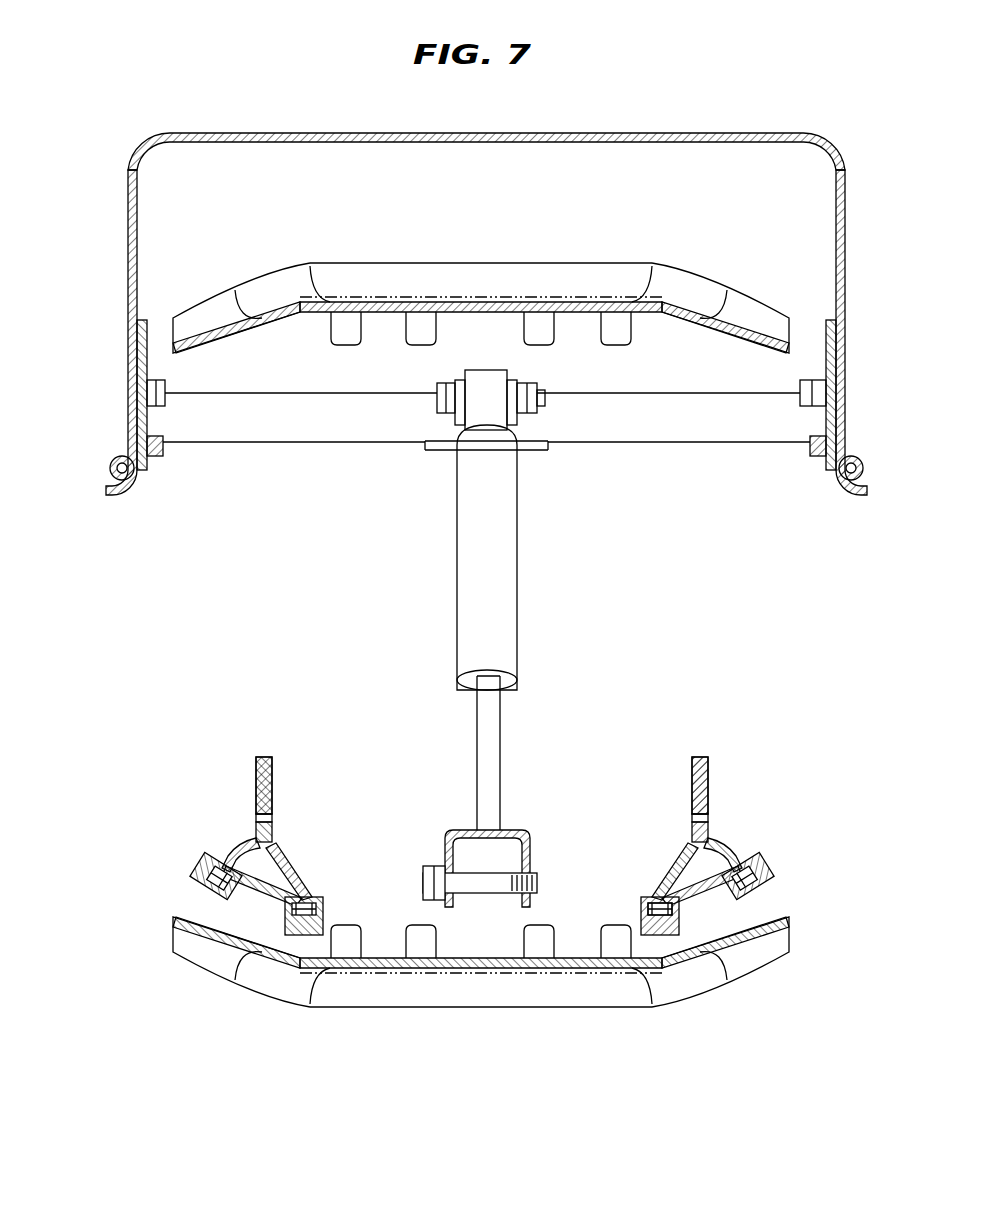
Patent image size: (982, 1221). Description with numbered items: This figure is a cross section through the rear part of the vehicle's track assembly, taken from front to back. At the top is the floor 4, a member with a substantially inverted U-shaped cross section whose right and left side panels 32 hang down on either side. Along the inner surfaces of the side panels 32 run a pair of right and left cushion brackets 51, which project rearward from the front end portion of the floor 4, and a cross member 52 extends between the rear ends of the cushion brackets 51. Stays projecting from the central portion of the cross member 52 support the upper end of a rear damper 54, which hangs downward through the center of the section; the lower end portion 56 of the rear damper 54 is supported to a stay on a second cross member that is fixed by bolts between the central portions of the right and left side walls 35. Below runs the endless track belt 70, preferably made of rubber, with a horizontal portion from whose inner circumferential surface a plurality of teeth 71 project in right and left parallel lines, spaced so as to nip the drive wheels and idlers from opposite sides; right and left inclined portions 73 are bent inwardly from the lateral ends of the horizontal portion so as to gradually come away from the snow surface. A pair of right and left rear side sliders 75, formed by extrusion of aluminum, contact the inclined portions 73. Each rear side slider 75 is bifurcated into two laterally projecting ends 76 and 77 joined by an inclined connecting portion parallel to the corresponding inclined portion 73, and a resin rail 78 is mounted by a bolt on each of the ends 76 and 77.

The floor 4 is at (648, 132).
The side panels 32 is at (128, 228).
The cushion brackets 51 is at (145, 335).
The cross member 52 is at (686, 444).
The rear damper 54 is at (520, 500).
The lower end portion 56 is at (512, 835).
The endless track belt 70 is at (458, 272).
The teeth 71 is at (420, 335).
The inclined portions 73 is at (688, 300).
The side walls 35 is at (710, 778).
The rear side sliders 75 is at (277, 873).
The laterally projecting end 76 is at (647, 903).
The laterally projecting end 77 is at (768, 860).
The resin rail 78 is at (768, 886).